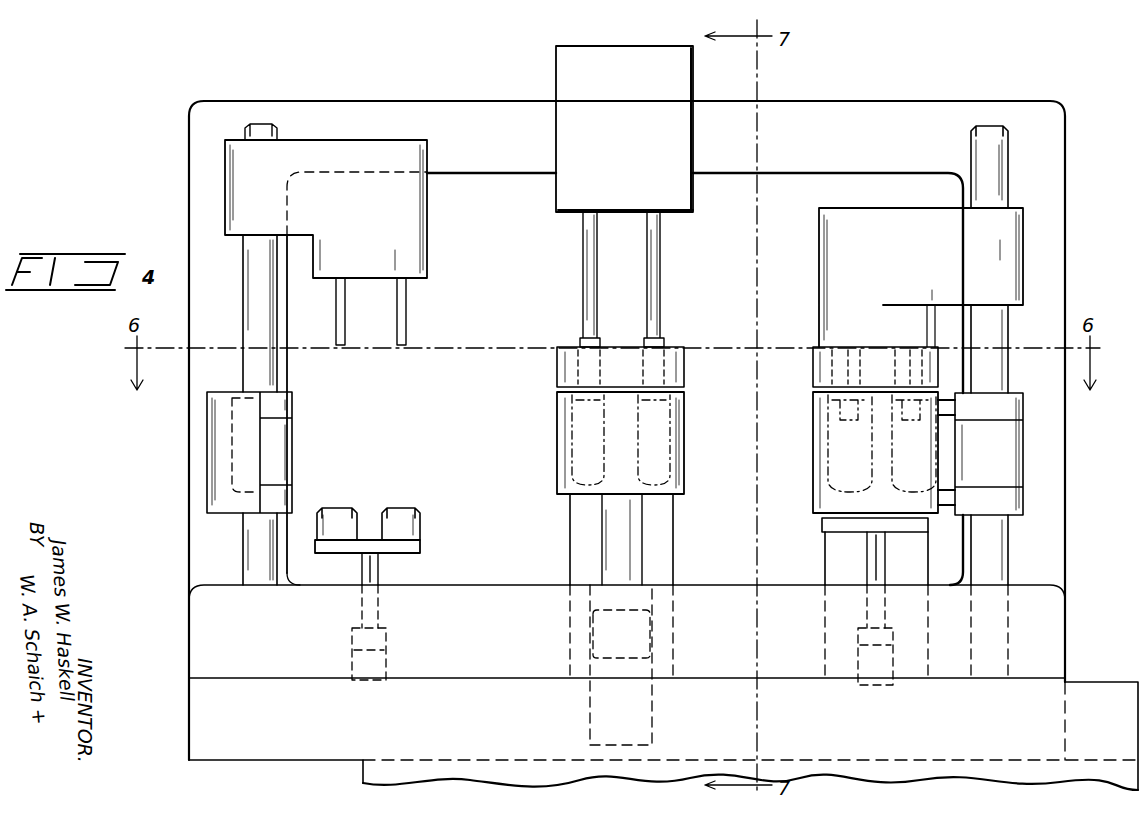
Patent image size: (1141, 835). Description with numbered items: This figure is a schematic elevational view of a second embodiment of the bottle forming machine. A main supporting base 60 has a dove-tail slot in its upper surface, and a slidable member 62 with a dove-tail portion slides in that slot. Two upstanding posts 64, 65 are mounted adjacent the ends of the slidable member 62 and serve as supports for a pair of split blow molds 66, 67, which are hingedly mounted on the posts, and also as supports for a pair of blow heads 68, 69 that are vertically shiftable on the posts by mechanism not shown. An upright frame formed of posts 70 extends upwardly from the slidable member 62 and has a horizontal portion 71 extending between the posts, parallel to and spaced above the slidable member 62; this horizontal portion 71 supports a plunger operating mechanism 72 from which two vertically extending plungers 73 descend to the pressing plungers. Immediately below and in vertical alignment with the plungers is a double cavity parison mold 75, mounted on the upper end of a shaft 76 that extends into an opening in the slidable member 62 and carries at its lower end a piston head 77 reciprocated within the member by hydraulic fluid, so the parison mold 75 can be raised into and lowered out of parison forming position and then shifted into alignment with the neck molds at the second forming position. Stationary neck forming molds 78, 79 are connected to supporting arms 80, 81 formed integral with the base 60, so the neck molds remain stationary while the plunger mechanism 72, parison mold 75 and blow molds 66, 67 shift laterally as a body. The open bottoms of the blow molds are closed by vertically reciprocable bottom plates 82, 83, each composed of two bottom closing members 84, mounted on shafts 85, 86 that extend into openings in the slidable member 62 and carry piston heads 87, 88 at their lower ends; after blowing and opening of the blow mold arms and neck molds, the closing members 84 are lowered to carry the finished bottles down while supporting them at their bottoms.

The main supporting base 60 is at (1085, 690).
The slidable member 62 is at (1045, 642).
The upstanding post 64 is at (985, 153).
The upstanding post 65 is at (262, 130).
The blow mold 66 is at (1040, 463).
The blow mold 67 is at (196, 479).
The blow head 68 is at (997, 233).
The blow head 69 is at (245, 182).
The posts of upright frame member 70 is at (207, 220).
The horizontal portion 71 is at (775, 116).
The plunger operating mechanism 72 is at (614, 62).
The guide rods 73 is at (655, 308).
The double cavity parison mold 75 is at (678, 446).
The shaft 76 is at (621, 619).
The piston head 77 is at (636, 636).
The stationary neck forming mold 78 is at (680, 374).
The stationary neck forming mold 79 is at (822, 366).
The supporting arm 80 is at (660, 523).
The supporting arm 81 is at (835, 572).
The bottom plate 82 is at (406, 562).
The bottom plate 83 is at (851, 547).
The bottom closing members 84 is at (398, 530).
The shaft 85 is at (362, 571).
The shaft 86 is at (877, 564).
The piston head 87 is at (378, 661).
The piston head 88 is at (880, 643).